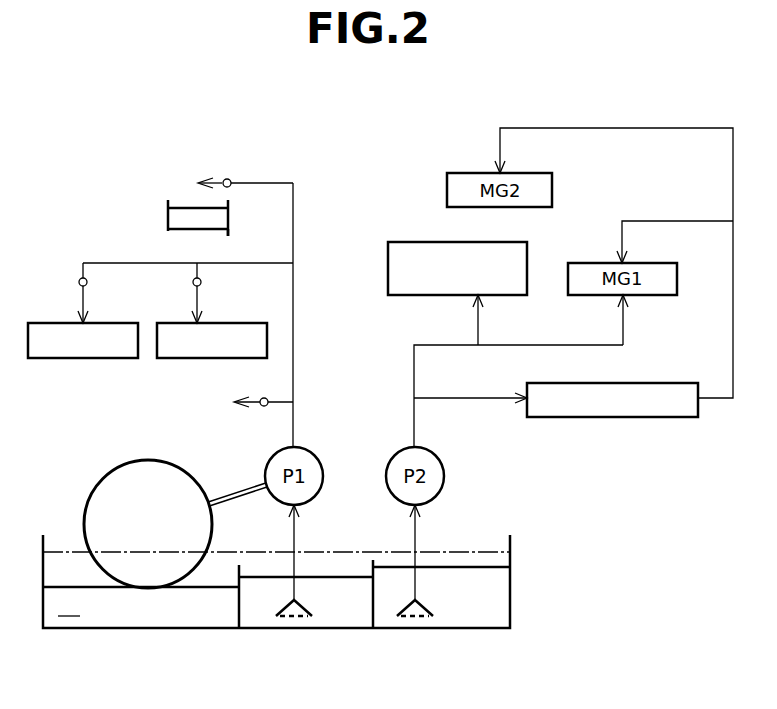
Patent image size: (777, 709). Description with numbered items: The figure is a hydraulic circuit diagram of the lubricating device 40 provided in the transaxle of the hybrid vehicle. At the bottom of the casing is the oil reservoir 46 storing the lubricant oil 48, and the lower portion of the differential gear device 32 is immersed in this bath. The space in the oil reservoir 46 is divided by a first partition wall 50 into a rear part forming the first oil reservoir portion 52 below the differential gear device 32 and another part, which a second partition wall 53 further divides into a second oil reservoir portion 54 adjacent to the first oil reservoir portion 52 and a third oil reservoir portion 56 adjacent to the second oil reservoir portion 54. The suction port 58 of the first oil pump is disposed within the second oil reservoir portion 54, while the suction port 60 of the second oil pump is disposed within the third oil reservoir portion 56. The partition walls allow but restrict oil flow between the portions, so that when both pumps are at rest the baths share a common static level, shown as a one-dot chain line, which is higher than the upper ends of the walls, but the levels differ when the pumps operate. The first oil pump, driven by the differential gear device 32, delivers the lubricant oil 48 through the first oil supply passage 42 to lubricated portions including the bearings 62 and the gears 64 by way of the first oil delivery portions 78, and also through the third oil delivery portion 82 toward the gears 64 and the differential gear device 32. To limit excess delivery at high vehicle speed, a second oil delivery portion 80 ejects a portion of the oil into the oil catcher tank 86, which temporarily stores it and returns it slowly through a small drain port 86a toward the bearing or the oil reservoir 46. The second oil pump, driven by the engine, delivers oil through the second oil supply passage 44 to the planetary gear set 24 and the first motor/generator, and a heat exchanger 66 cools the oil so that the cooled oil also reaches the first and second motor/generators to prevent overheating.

The lubricating device 40 is at (152, 126).
The first oil supply passage 42 is at (295, 347).
The second oil delivery portion 80 is at (230, 180).
The oil catcher tank 86 is at (167, 212).
The drain port 86a is at (229, 234).
The first oil delivery portion 78 is at (79, 282).
The gears 64 is at (62, 355).
The bearings 62 is at (195, 355).
The third oil delivery portion 82 is at (262, 398).
The planetary gear set 24 is at (415, 246).
The second oil supply passage 44 is at (413, 388).
The heat exchanger 66 is at (628, 388).
The differential gear device 32 is at (113, 482).
The oil reservoir 46 is at (494, 656).
The lubricant oil 48 is at (69, 606).
The first oil reservoir portion 52 is at (141, 615).
The first partition wall 50 is at (238, 613).
The second oil reservoir portion 54 is at (262, 615).
The suction port 58 is at (300, 618).
The second partition wall 53 is at (372, 613).
The suction port 60 is at (412, 618).
The third oil reservoir portion 56 is at (450, 615).